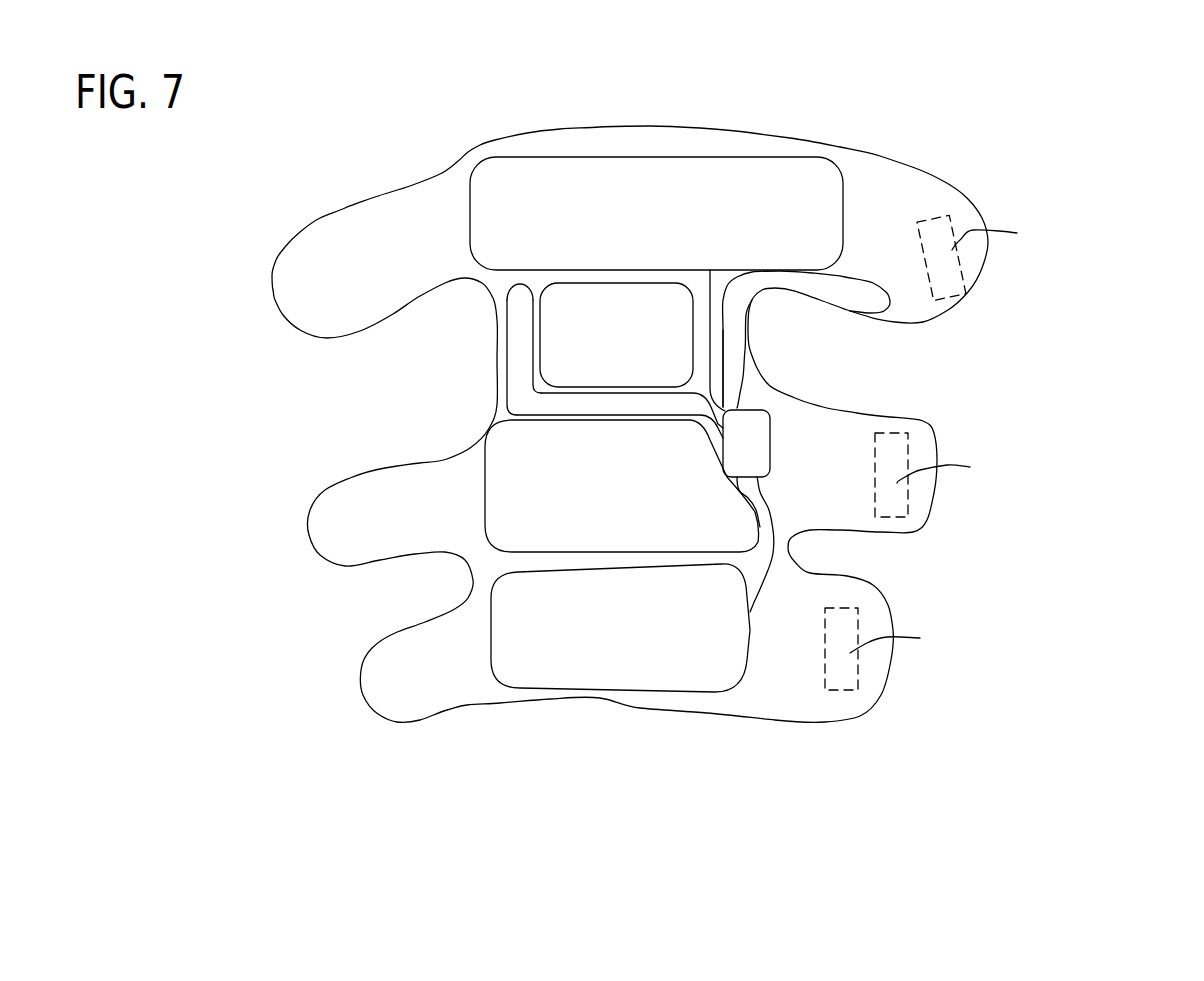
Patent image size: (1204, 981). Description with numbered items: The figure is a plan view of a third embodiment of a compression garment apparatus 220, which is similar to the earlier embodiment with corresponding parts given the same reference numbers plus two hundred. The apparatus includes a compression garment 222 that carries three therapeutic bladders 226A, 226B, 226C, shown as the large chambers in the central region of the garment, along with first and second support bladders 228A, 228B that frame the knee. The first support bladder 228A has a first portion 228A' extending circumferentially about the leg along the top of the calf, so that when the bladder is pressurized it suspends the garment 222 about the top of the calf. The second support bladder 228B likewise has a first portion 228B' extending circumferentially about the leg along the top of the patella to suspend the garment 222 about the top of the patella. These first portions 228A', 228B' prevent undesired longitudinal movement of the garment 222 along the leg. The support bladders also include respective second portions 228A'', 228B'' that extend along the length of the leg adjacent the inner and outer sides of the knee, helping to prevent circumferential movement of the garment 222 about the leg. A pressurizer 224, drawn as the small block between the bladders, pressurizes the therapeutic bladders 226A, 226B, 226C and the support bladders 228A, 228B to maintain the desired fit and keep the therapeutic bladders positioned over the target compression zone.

The compression garment apparatus 220 is at (1108, 168).
The compression garment 222 is at (442, 180).
The pressurizer 224 is at (773, 441).
The therapeutic bladder 226A is at (683, 683).
The therapeutic bladder 226B is at (567, 537).
The therapeutic bladder 226C is at (540, 172).
The first support bladder 228A is at (460, 379).
The first portion of first support bladder 228A' is at (460, 434).
The second portion of first support bladder 228A'' is at (459, 349).
The second support bladder 228B is at (817, 339).
The first portion of second support bladder 228B' is at (751, 242).
The second portion of second support bladder 228B'' is at (797, 368).